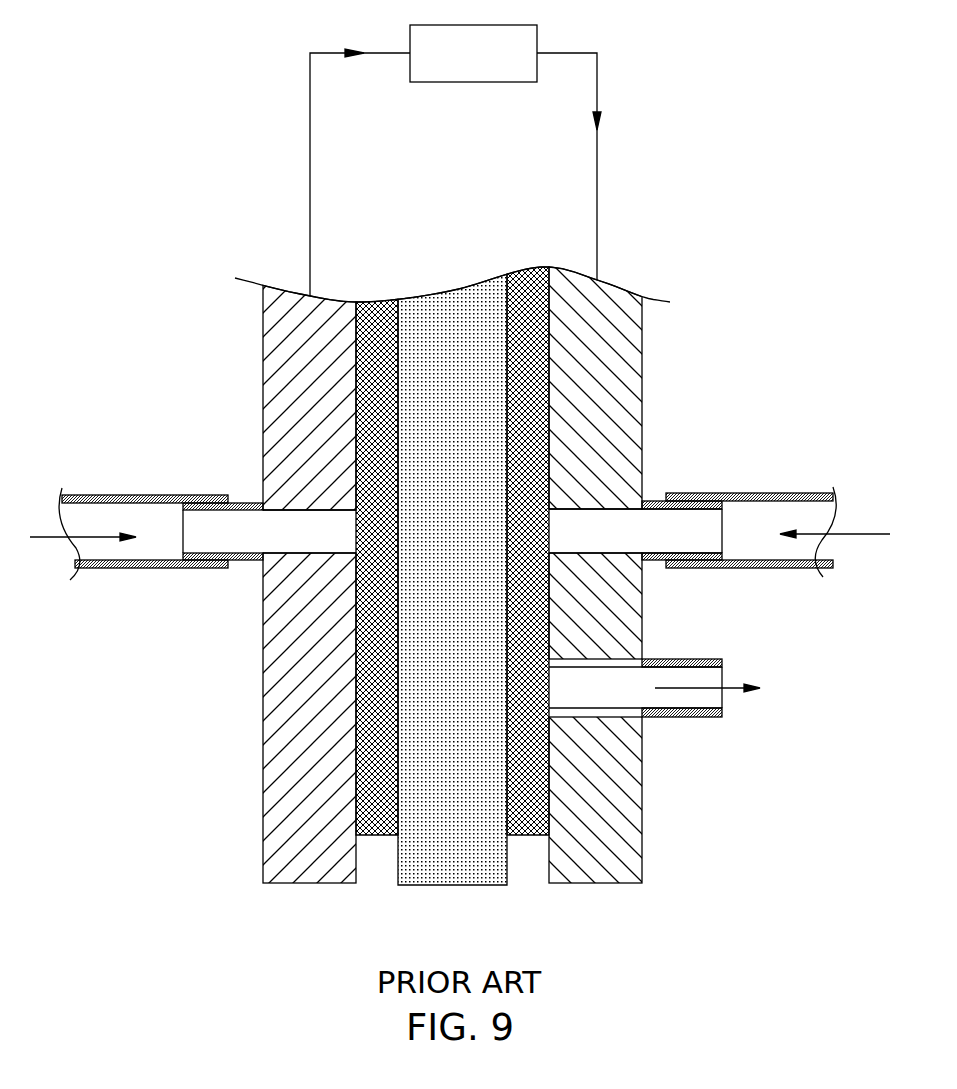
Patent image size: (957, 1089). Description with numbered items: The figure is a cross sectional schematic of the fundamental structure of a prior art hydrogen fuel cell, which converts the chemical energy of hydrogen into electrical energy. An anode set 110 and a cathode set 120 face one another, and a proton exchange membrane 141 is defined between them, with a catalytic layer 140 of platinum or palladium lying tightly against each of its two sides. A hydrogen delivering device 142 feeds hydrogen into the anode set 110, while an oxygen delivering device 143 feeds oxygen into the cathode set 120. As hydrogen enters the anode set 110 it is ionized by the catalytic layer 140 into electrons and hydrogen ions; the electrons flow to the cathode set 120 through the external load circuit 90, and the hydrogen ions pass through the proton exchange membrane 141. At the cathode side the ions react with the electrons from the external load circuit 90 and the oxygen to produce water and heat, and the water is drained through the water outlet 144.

The external load circuit 90 is at (542, 55).
The anode set 110 is at (263, 663).
The cathode set 120 is at (637, 745).
The catalytic layer 140 is at (375, 302).
The proton exchange membrane 141 is at (477, 280).
The hydrogen delivering device 142 is at (204, 495).
The oxygen delivering device 143 is at (710, 493).
The water outlet 144 is at (710, 680).